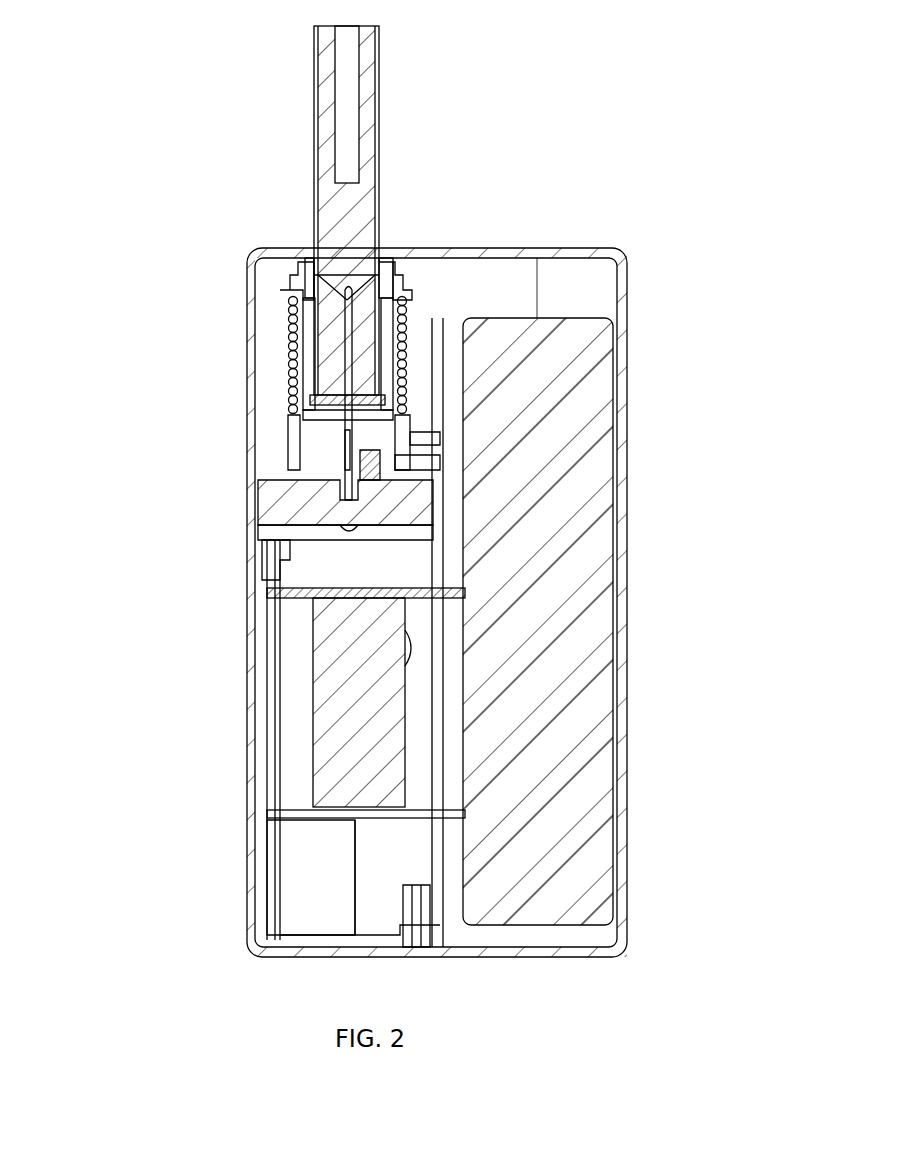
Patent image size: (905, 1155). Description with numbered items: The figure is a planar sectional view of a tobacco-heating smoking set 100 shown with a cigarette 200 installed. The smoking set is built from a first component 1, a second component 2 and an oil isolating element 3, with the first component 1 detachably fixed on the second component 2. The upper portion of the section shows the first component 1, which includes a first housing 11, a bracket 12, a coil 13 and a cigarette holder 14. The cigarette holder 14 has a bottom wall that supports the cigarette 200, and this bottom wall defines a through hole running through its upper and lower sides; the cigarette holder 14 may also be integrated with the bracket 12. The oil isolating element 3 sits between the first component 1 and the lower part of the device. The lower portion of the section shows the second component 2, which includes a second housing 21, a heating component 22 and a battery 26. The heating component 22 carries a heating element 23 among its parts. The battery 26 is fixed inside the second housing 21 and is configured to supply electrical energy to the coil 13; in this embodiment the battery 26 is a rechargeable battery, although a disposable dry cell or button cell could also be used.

The aerosol generating device 100 is at (118, 348).
The cigarette 200 is at (368, 118).
The first component 1 is at (185, 273).
The first housing 11 is at (290, 266).
The bracket 12 is at (292, 304).
The coil 13 is at (292, 352).
The cigarette holder 14 is at (292, 396).
The oil isolating element 3 is at (258, 470).
The second component 2 is at (165, 545).
The heating component 22 is at (257, 513).
The second housing 21 is at (255, 605).
The battery 26 is at (478, 650).
The heating element 23 is at (415, 298).